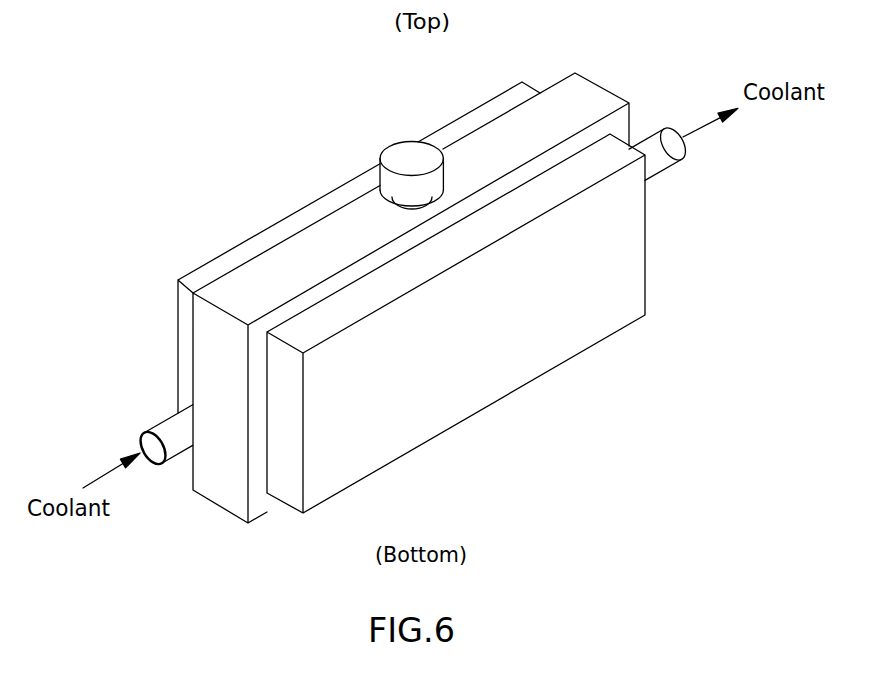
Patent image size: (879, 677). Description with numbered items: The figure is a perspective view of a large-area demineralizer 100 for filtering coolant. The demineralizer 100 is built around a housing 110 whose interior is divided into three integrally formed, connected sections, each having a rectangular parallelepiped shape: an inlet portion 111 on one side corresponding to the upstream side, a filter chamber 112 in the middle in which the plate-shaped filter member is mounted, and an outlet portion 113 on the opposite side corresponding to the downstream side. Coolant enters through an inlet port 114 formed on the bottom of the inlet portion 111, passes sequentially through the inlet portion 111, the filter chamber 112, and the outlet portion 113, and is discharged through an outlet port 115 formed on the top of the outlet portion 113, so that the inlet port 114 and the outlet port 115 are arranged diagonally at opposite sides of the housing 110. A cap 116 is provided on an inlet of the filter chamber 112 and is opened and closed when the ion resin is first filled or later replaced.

The large-area demineralizer 100 is at (573, 373).
The housing 110 is at (257, 120).
The inlet portion 111 is at (215, 270).
The filter chamber 112 is at (277, 265).
The outlet portion 113 is at (348, 273).
The inlet port 114 is at (170, 430).
The outlet port 115 is at (663, 157).
The cap 116 is at (405, 153).